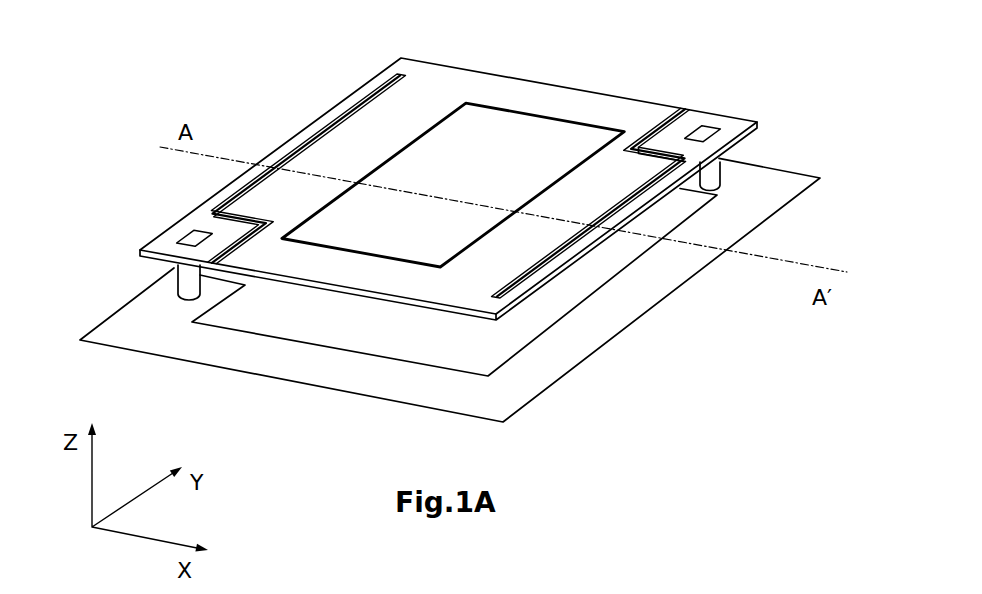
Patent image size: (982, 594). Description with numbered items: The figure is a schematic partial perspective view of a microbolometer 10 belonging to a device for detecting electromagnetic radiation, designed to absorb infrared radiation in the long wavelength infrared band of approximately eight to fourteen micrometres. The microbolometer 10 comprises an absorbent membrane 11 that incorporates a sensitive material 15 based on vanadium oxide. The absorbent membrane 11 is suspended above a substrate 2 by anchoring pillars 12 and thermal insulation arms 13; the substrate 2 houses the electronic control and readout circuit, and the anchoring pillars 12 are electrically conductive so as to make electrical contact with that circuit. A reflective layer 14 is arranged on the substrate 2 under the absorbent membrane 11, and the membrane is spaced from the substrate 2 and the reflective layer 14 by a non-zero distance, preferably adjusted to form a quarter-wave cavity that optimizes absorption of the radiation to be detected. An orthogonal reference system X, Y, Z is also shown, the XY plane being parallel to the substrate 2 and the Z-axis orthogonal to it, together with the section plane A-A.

The microbolometer 10 is at (463, 216).
The absorbent membrane 11 is at (635, 90).
The anchoring pillars 12 is at (177, 284).
The thermal insulation arms 13 is at (217, 194).
The reflective layer 14 is at (587, 298).
The sensitive material 15 is at (508, 102).
The substrate 2 is at (799, 204).